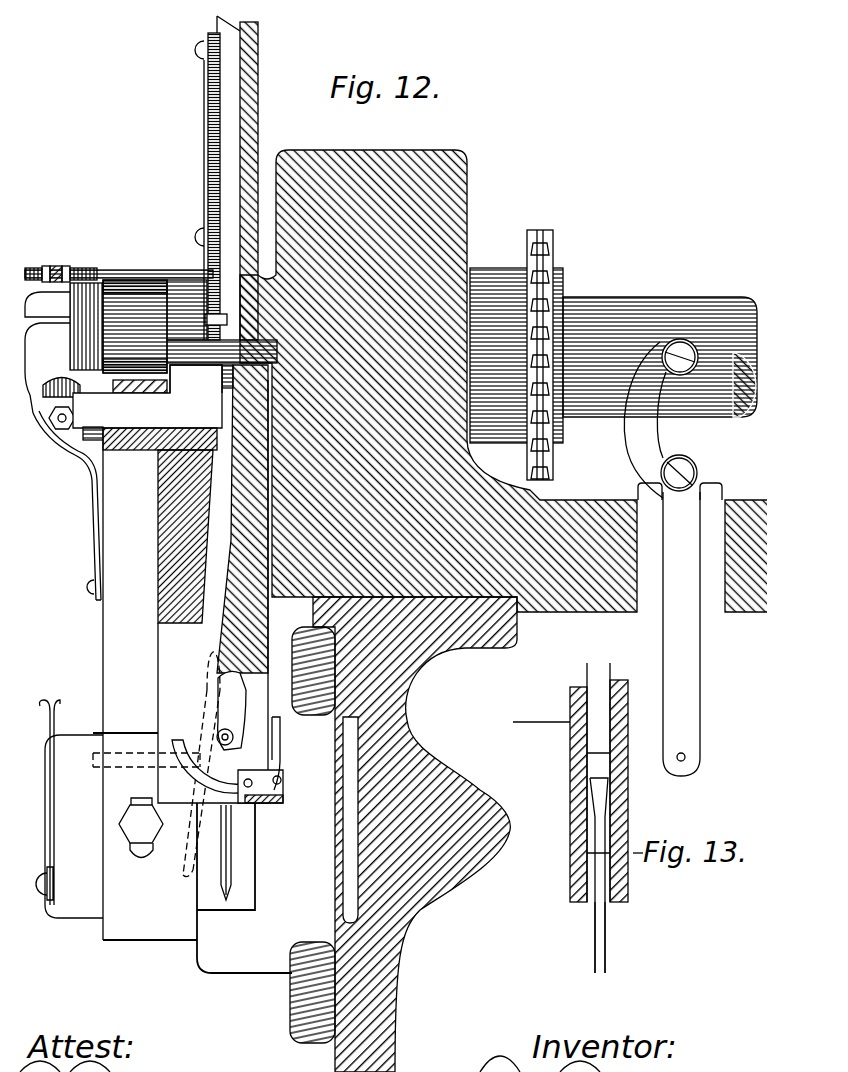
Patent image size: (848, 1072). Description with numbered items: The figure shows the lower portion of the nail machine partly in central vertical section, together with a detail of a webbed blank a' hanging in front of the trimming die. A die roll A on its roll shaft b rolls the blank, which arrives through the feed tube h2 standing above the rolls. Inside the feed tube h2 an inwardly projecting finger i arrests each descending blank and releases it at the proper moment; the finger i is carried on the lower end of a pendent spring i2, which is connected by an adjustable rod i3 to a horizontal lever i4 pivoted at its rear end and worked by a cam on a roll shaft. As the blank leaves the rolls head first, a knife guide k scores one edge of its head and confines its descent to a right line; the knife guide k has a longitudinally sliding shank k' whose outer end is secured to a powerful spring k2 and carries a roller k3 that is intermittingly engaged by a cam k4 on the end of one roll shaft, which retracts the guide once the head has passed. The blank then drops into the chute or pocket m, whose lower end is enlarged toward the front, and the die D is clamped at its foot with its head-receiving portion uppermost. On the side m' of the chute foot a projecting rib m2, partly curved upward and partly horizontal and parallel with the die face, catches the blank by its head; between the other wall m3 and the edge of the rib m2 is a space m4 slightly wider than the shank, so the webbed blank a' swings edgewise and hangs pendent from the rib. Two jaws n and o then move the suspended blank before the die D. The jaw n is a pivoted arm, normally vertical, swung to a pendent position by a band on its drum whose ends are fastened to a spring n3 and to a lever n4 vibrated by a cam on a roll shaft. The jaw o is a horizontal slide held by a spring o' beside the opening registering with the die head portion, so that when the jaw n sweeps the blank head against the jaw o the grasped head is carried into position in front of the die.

In FIG. 12, the feed tube h2 is at (228, 147).
In FIG. 12, the pendent spring i2 is at (212, 209).
In FIG. 12, the adjustable rod i3 is at (148, 278).
In FIG. 12, the horizontal lever i4 is at (58, 269).
In FIG. 12, the inwardly projecting finger i is at (205, 320).
In FIG. 12, the die roll A is at (185, 293).
In FIG. 12, the cam k4 is at (72, 308).
In FIG. 12, the roller k3 is at (62, 372).
In FIG. 12, the shank k' is at (147, 407).
In FIG. 12, the knife guide k is at (196, 379).
In FIG. 12, the spring k2 is at (80, 478).
In FIG. 12, the roll shaft b is at (660, 345).
In FIG. 12, the lever n4 is at (662, 557).
In FIG. 12, the chute or pocket m is at (237, 519).
In FIG. 13, the chute or pocket m is at (598, 782).
In FIG. 12, the side of chute m' is at (198, 591).
In FIG. 13, the side of chute m' is at (558, 794).
In FIG. 12, the projecting rib m2 is at (183, 740).
In FIG. 13, the projecting rib m2 is at (588, 807).
In FIG. 13, the other wall of chute m3 is at (628, 737).
In FIG. 13, the space m4 is at (615, 810).
In FIG. 12, the jaw n is at (228, 682).
In FIG. 12, the spring n3 is at (47, 725).
In FIG. 12, the jaw o is at (252, 786).
In FIG. 12, the spring o' is at (287, 753).
In FIG. 12, the die D is at (192, 877).
In FIG. 13, the webbed blank a' is at (611, 937).